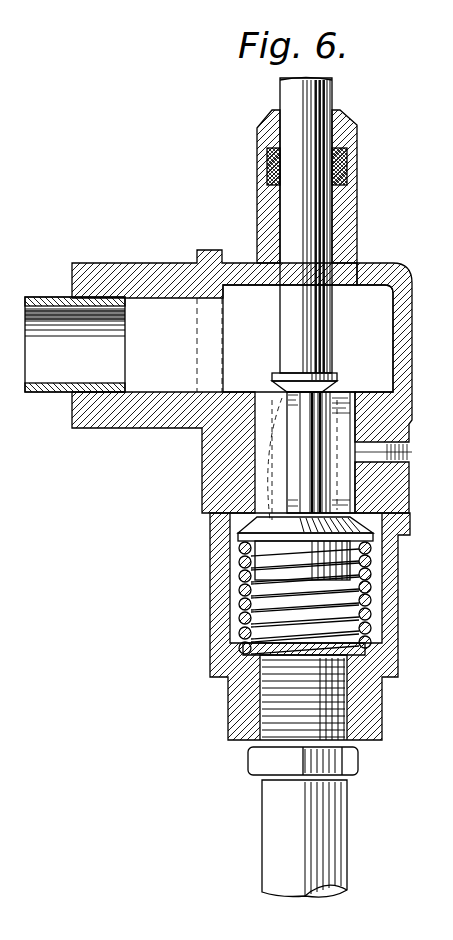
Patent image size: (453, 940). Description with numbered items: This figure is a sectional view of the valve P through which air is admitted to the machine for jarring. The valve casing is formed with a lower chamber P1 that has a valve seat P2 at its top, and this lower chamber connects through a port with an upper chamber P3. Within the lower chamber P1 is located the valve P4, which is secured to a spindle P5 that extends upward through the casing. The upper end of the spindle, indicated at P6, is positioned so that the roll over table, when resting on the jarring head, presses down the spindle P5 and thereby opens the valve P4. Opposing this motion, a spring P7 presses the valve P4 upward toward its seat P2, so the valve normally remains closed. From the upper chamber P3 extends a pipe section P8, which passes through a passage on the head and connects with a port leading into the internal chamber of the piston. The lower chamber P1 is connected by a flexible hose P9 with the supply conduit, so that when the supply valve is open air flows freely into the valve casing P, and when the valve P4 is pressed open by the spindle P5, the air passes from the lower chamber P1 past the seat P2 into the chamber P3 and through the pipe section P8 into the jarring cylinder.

The valve P is at (202, 513).
The chamber P1 is at (239, 580).
The valve seat P2 is at (262, 514).
The chamber P3 is at (308, 338).
The valve P4 is at (260, 523).
The spindle P5 is at (293, 353).
The upper end of spindle P6 is at (315, 78).
The spring P7 is at (242, 618).
The pipe section P8 is at (75, 344).
The flexible hose P9 is at (303, 822).